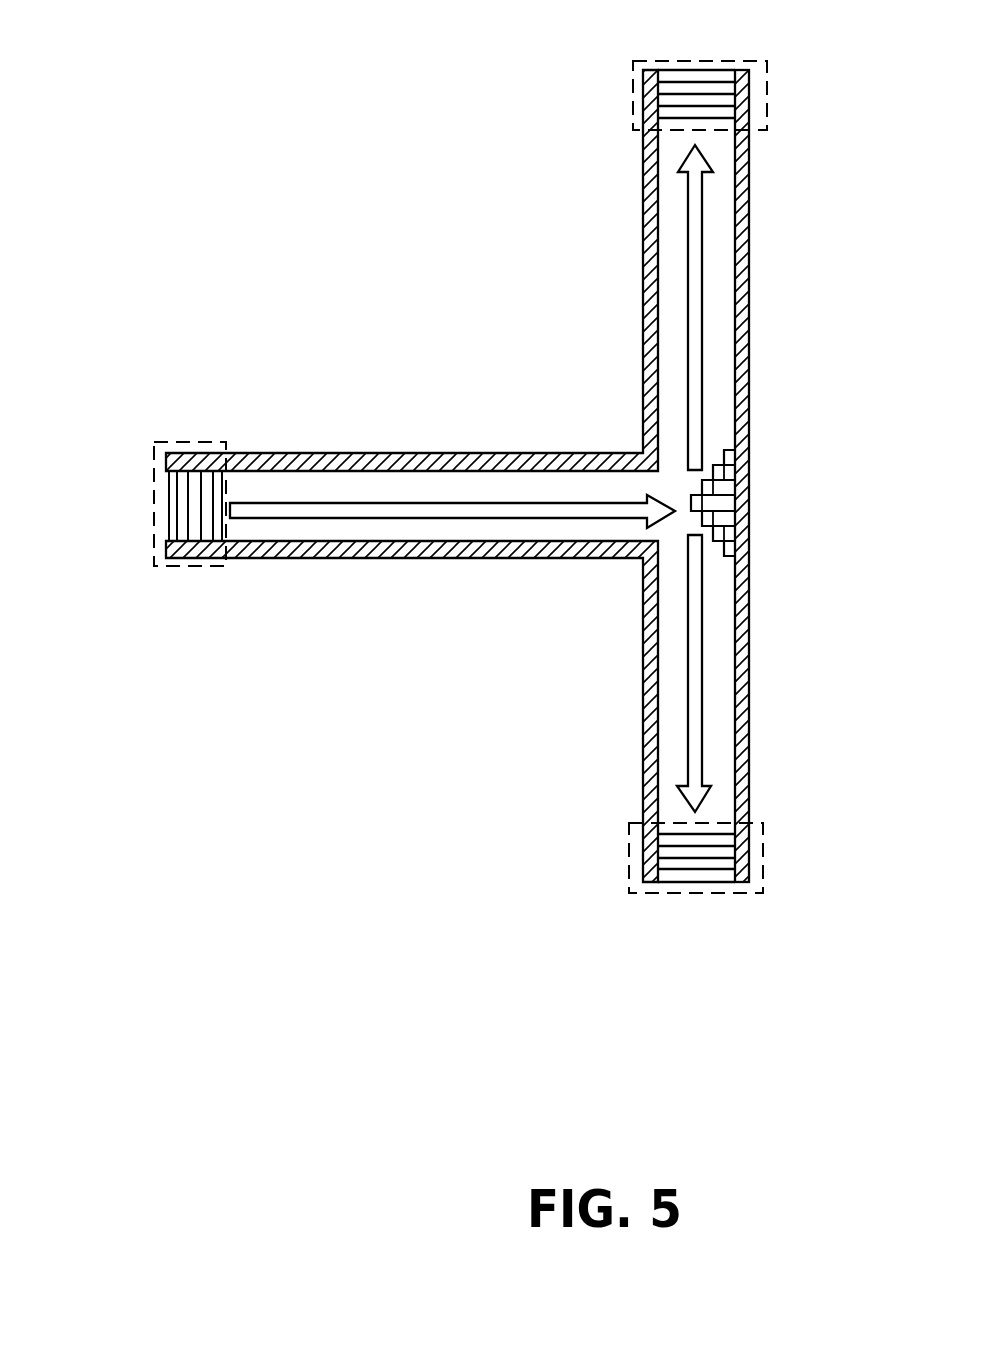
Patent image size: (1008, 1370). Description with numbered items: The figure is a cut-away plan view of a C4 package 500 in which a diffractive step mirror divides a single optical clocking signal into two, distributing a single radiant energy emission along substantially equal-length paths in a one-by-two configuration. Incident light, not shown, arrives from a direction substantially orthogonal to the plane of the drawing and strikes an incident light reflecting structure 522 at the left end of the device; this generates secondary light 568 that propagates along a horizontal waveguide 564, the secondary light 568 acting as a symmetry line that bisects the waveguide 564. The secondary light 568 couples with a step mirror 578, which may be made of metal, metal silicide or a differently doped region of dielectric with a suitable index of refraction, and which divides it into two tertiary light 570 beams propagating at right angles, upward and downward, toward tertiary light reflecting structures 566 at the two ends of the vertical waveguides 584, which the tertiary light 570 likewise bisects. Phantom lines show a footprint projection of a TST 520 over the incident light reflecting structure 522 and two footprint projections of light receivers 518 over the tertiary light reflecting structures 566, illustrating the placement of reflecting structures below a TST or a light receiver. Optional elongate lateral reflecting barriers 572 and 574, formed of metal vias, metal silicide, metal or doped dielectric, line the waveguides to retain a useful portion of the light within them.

The C4 package 500 is at (253, 195).
The light receiver 518 is at (765, 91).
The TST 520 is at (169, 442).
The incident light reflecting structure 522 is at (187, 515).
The waveguide 564 is at (368, 533).
The tertiary light reflecting structure 566 is at (680, 92).
The secondary light 568 is at (357, 518).
The tertiary light 570 is at (702, 366).
The elongate lateral reflecting barrier 572 is at (643, 296).
The elongate lateral reflecting barrier 574 is at (749, 273).
The step mirror 578 is at (718, 508).
The waveguide 584 is at (772, 479).